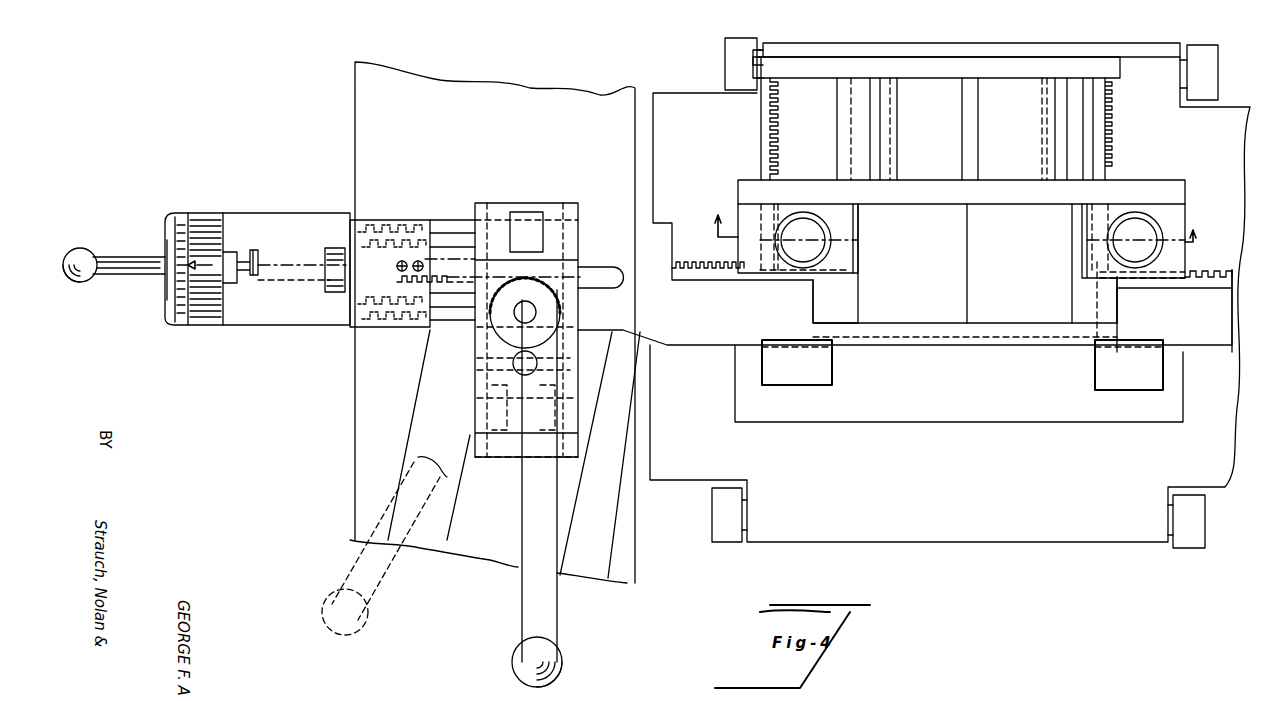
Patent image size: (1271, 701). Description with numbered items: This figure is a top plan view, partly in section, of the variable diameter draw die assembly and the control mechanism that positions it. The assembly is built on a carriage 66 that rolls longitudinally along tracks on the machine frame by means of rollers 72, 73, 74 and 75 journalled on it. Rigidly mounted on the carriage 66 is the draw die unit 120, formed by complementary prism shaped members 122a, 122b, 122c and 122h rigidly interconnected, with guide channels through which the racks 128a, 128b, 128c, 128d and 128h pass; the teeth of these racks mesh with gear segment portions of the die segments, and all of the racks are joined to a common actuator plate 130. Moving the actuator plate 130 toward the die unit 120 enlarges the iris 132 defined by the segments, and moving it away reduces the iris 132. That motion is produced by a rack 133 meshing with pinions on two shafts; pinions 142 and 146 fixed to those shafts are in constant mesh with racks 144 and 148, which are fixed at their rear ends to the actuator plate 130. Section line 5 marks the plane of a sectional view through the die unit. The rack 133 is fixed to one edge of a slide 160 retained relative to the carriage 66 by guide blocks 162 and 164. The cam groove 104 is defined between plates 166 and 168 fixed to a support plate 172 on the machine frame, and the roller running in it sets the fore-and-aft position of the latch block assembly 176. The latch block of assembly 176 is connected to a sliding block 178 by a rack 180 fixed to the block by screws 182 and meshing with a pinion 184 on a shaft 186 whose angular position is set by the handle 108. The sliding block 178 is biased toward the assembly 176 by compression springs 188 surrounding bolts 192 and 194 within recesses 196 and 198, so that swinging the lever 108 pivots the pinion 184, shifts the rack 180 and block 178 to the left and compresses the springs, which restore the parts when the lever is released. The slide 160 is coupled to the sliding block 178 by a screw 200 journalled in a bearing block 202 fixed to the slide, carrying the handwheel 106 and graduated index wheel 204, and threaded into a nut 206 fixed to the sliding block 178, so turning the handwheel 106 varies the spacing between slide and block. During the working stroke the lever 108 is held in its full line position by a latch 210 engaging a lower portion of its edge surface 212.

The carriage 66 is at (910, 542).
The roller 72 is at (1205, 522).
The roller 73 is at (1218, 72).
The roller 74 is at (725, 55).
The roller 75 is at (712, 513).
The actuator plate 130 is at (990, 50).
The draw die unit 120 is at (940, 142).
The rack 144 is at (760, 112).
The rack 148 is at (1110, 135).
The rack 128h is at (837, 108).
The rack 128a is at (897, 108).
The rack 128b is at (978, 108).
The rack 128c is at (1042, 146).
The rack 128d is at (1083, 154).
The pinion 142 is at (828, 228).
The pinion 146 is at (1160, 222).
The section line 5 is at (955, 241).
The rack 133 is at (695, 280).
The iris 132 is at (1200, 276).
The prism shaped member 122h is at (858, 300).
The prism shaped member 122a is at (967, 300).
The prism shaped member 122b is at (1072, 300).
The prism shaped member 122c is at (1117, 295).
The slide 160 is at (720, 346).
The guide block 162 is at (832, 367).
The guide block 164 is at (1095, 372).
The support plate 172 is at (355, 423).
The latch block assembly 176 is at (573, 199).
The sliding block 178 is at (395, 220).
The recess 196 is at (352, 222).
The bolt 192 is at (358, 233).
The bolt 194 is at (358, 307).
The recess 198 is at (358, 320).
The compression spring 188 is at (395, 264).
The screw 182 is at (395, 285).
The rack 180 is at (462, 278).
The pinion 184 is at (553, 283).
The shaft 186 is at (537, 313).
The latch 210 is at (515, 355).
The edge surface 212 is at (527, 497).
The handle 108 is at (563, 650).
The cam groove 104 is at (520, 483).
The plate 166 is at (428, 378).
The plate 168 is at (583, 498).
The handwheel 106 is at (120, 257).
The bearing block 202 is at (199, 213).
The screw 200 is at (265, 236).
The graduated index wheel 204 is at (170, 285).
The nut 206 is at (325, 268).